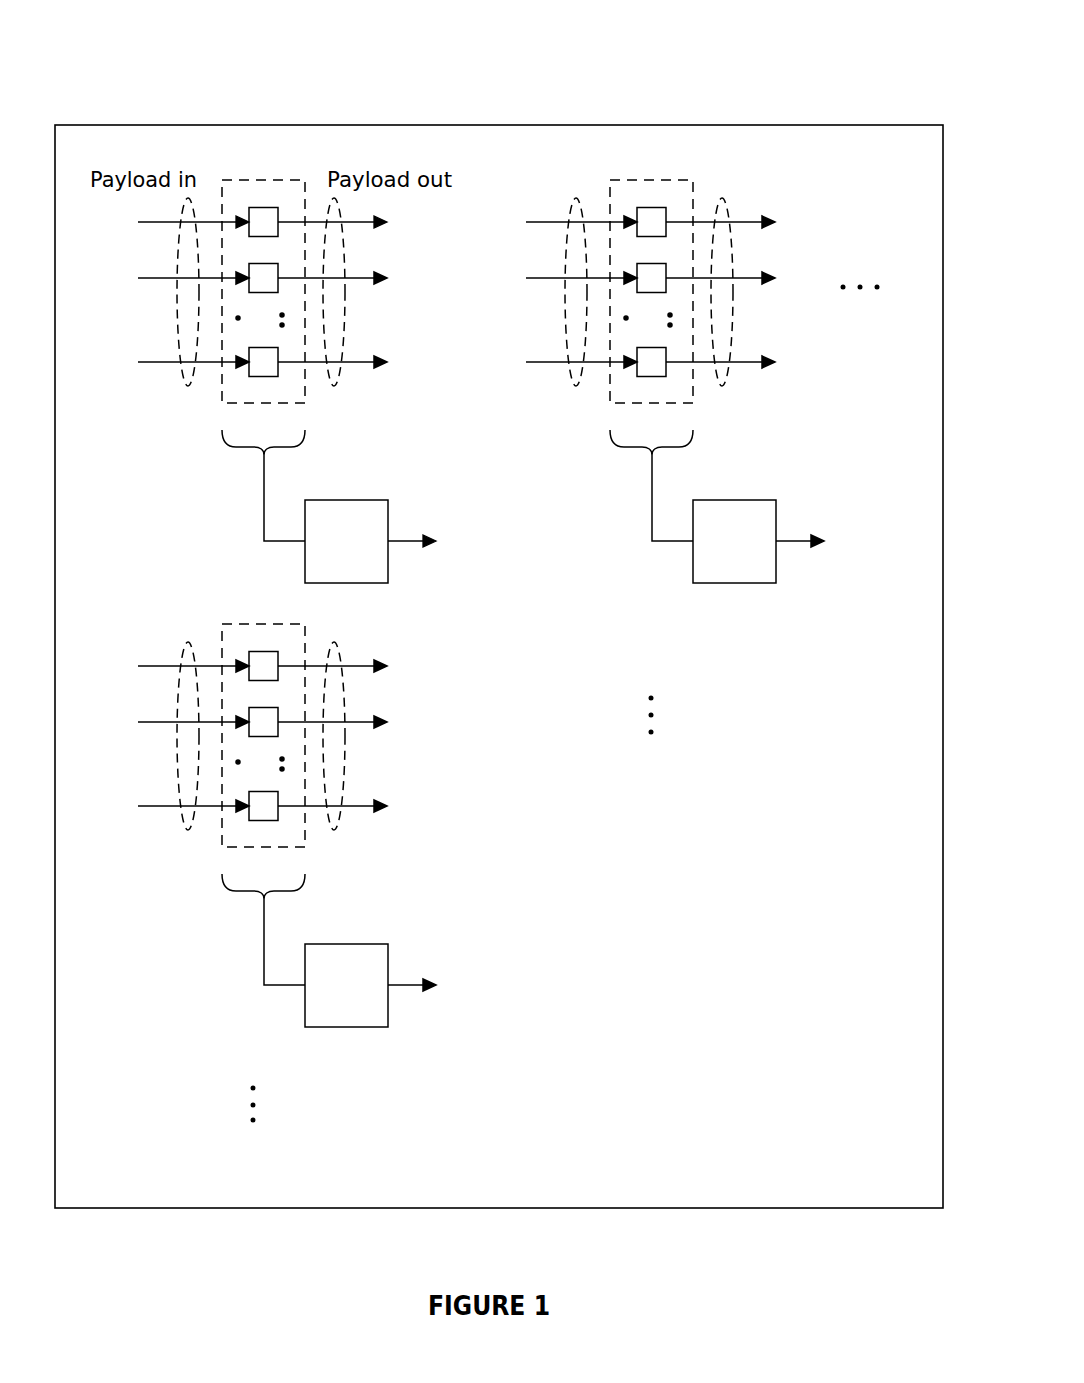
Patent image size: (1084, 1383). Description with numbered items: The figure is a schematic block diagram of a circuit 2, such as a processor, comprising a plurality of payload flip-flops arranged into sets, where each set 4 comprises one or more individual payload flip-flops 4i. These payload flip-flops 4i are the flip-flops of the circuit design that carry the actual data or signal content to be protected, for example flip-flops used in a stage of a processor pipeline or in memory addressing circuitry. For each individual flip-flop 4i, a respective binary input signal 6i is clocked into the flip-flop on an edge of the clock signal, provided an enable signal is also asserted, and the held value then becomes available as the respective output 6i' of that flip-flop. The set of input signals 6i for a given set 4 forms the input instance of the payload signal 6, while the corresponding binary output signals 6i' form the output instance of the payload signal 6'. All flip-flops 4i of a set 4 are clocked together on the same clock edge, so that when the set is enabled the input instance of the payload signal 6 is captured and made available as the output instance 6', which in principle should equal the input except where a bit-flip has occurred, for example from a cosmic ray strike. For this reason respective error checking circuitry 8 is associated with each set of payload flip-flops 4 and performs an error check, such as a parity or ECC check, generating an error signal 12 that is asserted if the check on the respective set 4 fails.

The circuit 2 is at (583, 125).
The set of payload flip-flops 4 is at (270, 180).
The payload flip-flop 4i is at (263, 214).
The input instance of the payload signal 6 is at (188, 335).
The output instance of the payload signal 6' is at (334, 335).
The binary input signal 6i is at (168, 242).
The output of the flip-flop 6i' is at (358, 244).
The error checking circuitry 8 is at (375, 563).
The error signal 12 is at (402, 540).